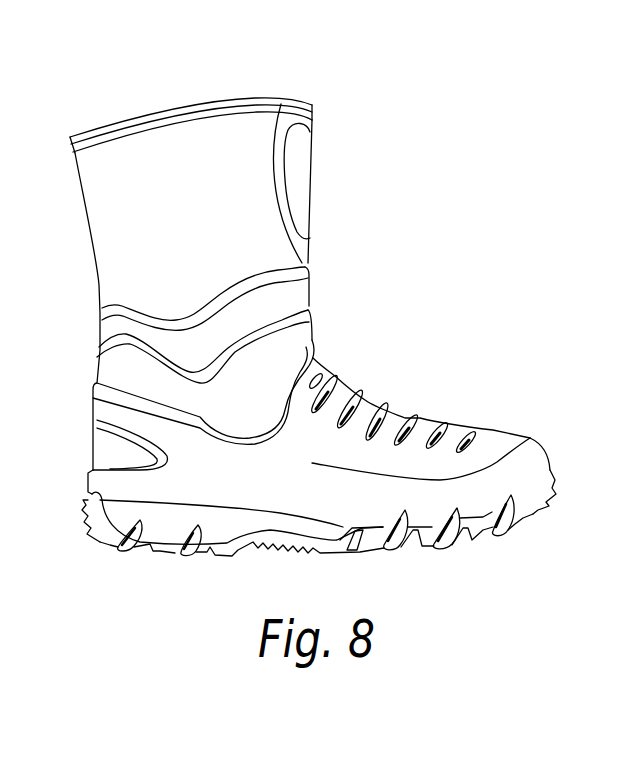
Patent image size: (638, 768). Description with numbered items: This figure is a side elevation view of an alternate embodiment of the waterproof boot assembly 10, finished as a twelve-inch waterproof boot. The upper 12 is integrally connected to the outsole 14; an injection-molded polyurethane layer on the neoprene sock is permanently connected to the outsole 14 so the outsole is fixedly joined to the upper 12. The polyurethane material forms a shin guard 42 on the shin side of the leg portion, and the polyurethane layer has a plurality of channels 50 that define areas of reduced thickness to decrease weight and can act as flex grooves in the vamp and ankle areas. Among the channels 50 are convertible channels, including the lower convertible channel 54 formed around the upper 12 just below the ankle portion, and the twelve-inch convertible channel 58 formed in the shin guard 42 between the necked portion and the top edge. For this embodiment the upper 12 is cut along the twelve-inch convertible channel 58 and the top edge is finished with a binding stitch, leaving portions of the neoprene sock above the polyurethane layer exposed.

The waterproof boot assembly 10 is at (347, 104).
The upper 12 is at (200, 138).
The outsole 14 is at (203, 550).
The shin guard 42 is at (300, 172).
The channels 50 is at (167, 372).
The lower convertible channel 54 is at (287, 398).
The 12-inch convertible channel 58 is at (280, 117).